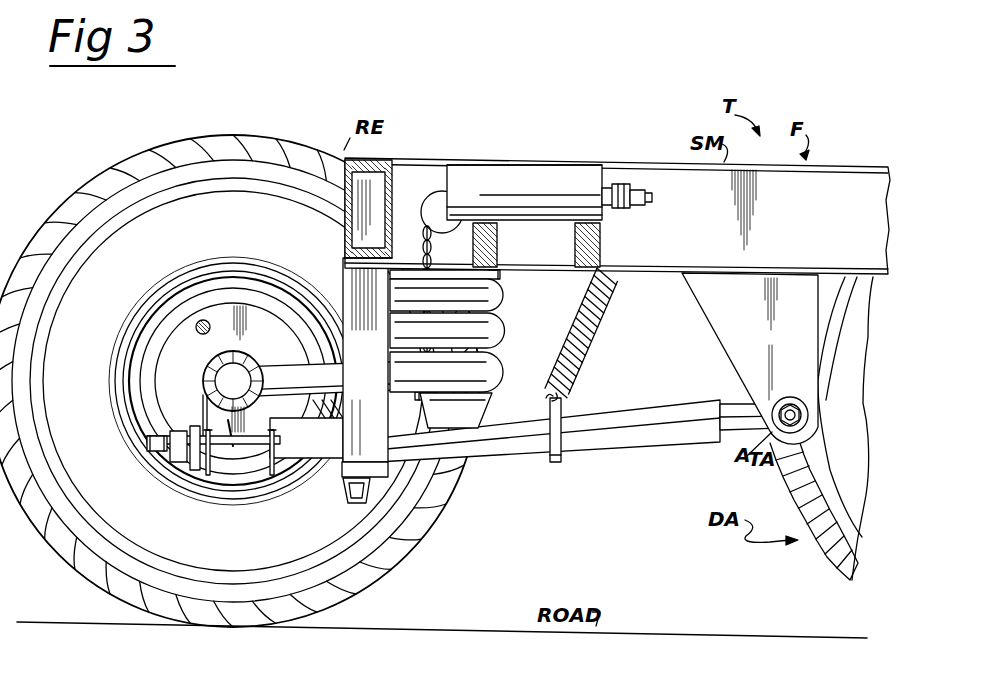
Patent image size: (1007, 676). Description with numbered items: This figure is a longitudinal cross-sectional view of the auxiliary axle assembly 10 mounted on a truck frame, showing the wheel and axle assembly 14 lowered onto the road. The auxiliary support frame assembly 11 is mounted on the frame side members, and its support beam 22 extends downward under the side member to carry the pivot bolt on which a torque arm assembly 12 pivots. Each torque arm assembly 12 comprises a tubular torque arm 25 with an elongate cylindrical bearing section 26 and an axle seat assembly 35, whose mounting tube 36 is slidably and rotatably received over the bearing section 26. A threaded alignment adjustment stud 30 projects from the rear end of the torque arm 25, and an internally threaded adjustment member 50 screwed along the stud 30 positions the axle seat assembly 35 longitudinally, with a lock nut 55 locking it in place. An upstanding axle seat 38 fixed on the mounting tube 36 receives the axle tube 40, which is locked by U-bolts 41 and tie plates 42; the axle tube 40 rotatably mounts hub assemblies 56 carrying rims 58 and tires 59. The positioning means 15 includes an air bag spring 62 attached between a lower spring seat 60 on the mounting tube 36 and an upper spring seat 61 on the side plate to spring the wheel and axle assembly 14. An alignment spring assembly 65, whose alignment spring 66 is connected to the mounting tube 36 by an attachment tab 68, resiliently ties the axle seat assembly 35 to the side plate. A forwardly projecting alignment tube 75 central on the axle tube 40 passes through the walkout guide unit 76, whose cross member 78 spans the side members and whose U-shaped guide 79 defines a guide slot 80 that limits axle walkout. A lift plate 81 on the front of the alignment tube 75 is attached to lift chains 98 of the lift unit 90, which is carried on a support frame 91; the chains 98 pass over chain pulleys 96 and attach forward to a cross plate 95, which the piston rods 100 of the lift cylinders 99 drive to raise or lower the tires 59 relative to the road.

The auxiliary axle assembly 10 is at (325, 140).
The auxiliary support frame assembly 11 is at (688, 330).
The torque arm assembly 12 is at (636, 472).
The wheel and axle assembly 14 is at (410, 580).
The positioning means 15 is at (608, 178).
The support beam 22 is at (758, 343).
The torque arm 25 is at (736, 400).
The bearing section 26 is at (735, 432).
The alignment adjustment stud 30 is at (150, 445).
The axle seat assembly 35 is at (200, 480).
The mounting tube 36 is at (482, 450).
The axle seat 38 is at (221, 414).
The axle tube 40 is at (210, 367).
The U-bolt 41 is at (240, 352).
The tie plate 42 is at (235, 444).
The adjustment member 50 is at (190, 470).
The lock nut 55 is at (170, 456).
The hub assembly 56 is at (252, 291).
The rim 58 is at (215, 266).
The tire 59 is at (158, 152).
The lower spring seat 60 is at (485, 410).
The upper spring seat 61 is at (500, 276).
The air bag spring 62 is at (497, 336).
The alignment spring assembly 65 is at (592, 366).
The alignment spring 66 is at (578, 370).
The attachment tab 68 is at (556, 465).
The alignment tube 75 is at (300, 378).
The walkout guide unit 76 is at (338, 508).
The cross member 78 is at (346, 242).
The U-shaped guide 79 is at (338, 268).
The guide slot 80 is at (360, 428).
The lift plate 81 is at (414, 380).
The lift unit 90 is at (536, 170).
The support frame 91 is at (576, 252).
The cross plate 95 is at (628, 206).
The chain pulley 96 is at (432, 200).
The lift chain 98 is at (436, 247).
The lift cylinder 99 is at (475, 170).
The piston rod 100 is at (653, 193).